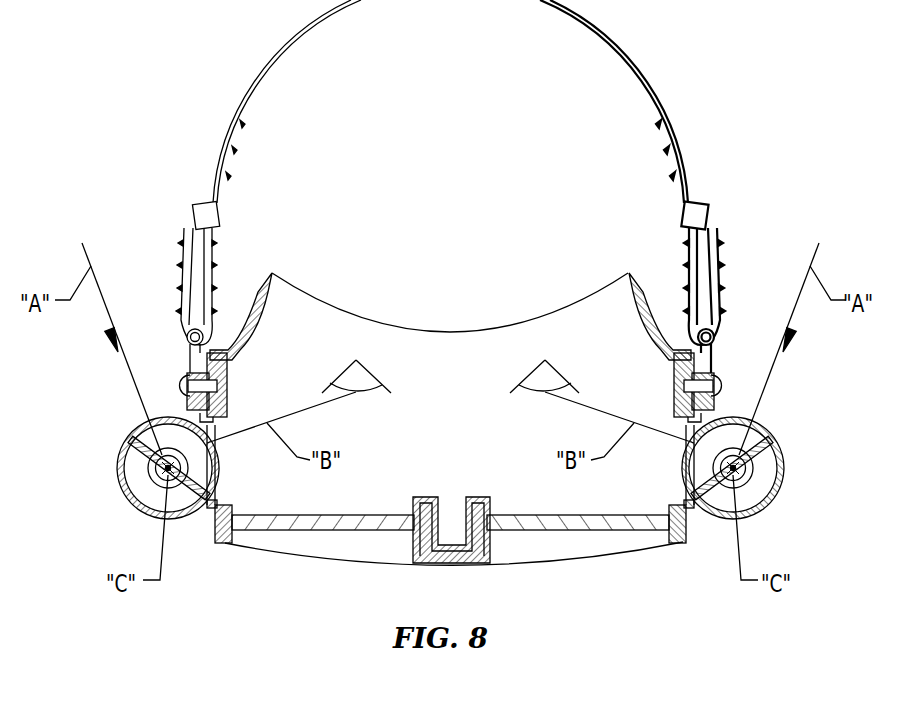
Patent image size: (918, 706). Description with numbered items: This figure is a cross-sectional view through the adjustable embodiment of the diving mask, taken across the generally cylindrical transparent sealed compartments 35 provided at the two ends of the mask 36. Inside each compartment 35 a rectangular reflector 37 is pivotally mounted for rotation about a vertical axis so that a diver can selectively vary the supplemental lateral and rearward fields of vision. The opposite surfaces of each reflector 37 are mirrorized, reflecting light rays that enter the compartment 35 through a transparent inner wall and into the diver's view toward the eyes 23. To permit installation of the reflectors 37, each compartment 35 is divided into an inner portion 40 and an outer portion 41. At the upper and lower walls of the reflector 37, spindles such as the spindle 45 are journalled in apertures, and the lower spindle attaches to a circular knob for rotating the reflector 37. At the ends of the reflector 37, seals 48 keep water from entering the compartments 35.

The eyes 23 is at (356, 394).
The sealed compartment 35 is at (150, 437).
The mask 36 is at (311, 607).
The reflector 37 is at (128, 443).
The inner portion 40 is at (217, 463).
The outer portion 41 is at (152, 532).
The spindle 45 is at (180, 475).
The seal 48 is at (140, 510).